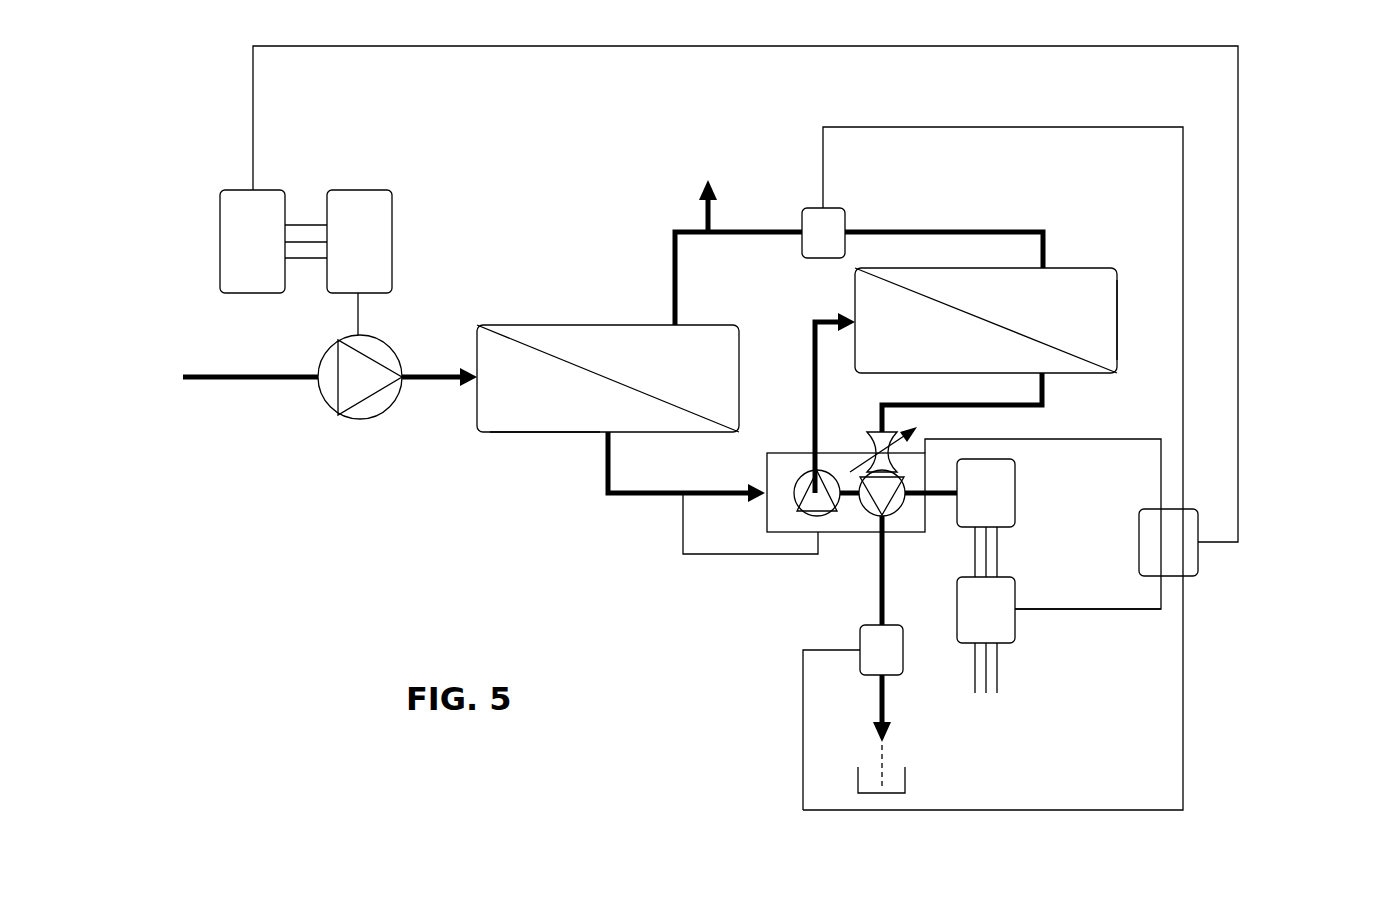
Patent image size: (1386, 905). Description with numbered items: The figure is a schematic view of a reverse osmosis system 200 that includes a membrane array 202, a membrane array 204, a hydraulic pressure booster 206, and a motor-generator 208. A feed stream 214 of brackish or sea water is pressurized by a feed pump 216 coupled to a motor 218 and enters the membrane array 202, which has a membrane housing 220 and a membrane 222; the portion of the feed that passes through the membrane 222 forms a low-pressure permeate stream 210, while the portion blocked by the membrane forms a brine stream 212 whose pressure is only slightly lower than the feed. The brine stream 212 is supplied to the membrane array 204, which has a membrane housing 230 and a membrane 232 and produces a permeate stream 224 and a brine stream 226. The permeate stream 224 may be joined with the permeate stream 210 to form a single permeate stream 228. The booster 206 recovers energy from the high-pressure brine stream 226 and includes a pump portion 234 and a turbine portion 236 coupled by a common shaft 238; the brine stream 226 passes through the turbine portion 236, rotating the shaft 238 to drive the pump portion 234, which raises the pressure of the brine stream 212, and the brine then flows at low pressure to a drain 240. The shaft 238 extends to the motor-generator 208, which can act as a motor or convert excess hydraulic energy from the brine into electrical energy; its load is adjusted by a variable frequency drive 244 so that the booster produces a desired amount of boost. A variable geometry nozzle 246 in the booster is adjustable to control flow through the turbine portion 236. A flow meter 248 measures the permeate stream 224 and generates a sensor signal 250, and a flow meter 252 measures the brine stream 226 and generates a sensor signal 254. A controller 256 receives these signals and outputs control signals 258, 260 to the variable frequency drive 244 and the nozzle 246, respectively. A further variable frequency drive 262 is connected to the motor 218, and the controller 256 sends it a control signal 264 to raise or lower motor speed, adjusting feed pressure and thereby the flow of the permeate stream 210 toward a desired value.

The reverse osmosis system 200 is at (1280, 168).
The membrane array 202 is at (513, 318).
The membrane array 204 is at (1087, 260).
The hydraulic pressure booster 206 is at (777, 442).
The motor-generator 208 is at (1022, 480).
The permeate stream 210 is at (675, 232).
The brine stream 212 is at (628, 495).
The feed stream 214 is at (430, 375).
The feed pump 216 is at (325, 405).
The motor 218 is at (358, 190).
The membrane housing 220 is at (516, 433).
The membrane 222 is at (598, 375).
The permeate stream 224 is at (1014, 232).
The brine stream 226 is at (1042, 396).
The single permeate stream 228 is at (708, 215).
The membrane housing 230 is at (1117, 290).
The membrane 232 is at (1040, 338).
The pump portion 234 is at (767, 467).
The turbine portion 236 is at (890, 517).
The common shaft 238 is at (850, 470).
The drain 240 is at (905, 778).
The variable frequency drive 244 is at (1015, 627).
The variable geometry nozzle 246 is at (885, 432).
The flow meter 248 is at (812, 208).
The sensor signal 250 is at (936, 127).
The flow meter 252 is at (860, 636).
The sensor signal 254 is at (803, 725).
The controller 256 is at (1198, 563).
The control signal 258 is at (1090, 609).
The control signal 260 is at (1161, 487).
The variable frequency drive 262 is at (220, 224).
The control signal 264 is at (1240, 382).